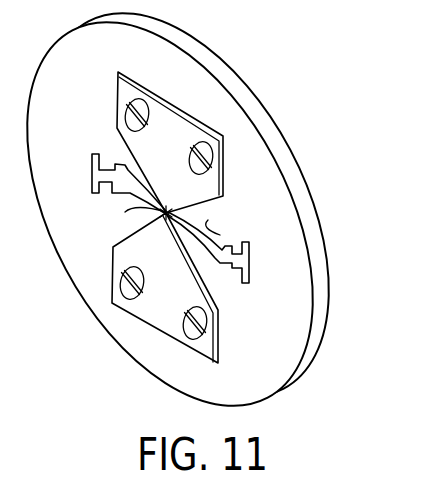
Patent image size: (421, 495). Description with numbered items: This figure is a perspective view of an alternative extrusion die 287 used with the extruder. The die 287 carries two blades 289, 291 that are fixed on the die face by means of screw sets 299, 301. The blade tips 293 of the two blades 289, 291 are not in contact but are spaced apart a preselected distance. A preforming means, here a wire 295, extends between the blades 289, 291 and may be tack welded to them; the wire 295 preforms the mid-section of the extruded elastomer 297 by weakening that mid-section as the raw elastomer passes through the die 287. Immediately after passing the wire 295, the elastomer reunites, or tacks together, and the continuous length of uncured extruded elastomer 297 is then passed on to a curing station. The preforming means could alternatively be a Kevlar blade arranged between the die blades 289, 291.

The extrusion die 287 is at (267, 125).
The blade 289 is at (225, 170).
The blade 291 is at (214, 348).
The blade tips 293 is at (162, 213).
The wire 295 is at (172, 212).
The extruded elastomer 297 is at (217, 266).
The screw set 299 is at (124, 115).
The screw set 301 is at (196, 338).